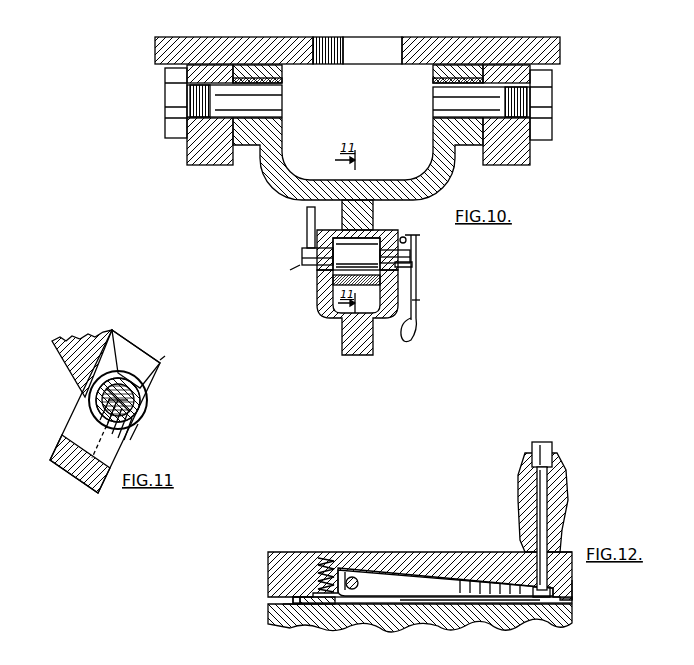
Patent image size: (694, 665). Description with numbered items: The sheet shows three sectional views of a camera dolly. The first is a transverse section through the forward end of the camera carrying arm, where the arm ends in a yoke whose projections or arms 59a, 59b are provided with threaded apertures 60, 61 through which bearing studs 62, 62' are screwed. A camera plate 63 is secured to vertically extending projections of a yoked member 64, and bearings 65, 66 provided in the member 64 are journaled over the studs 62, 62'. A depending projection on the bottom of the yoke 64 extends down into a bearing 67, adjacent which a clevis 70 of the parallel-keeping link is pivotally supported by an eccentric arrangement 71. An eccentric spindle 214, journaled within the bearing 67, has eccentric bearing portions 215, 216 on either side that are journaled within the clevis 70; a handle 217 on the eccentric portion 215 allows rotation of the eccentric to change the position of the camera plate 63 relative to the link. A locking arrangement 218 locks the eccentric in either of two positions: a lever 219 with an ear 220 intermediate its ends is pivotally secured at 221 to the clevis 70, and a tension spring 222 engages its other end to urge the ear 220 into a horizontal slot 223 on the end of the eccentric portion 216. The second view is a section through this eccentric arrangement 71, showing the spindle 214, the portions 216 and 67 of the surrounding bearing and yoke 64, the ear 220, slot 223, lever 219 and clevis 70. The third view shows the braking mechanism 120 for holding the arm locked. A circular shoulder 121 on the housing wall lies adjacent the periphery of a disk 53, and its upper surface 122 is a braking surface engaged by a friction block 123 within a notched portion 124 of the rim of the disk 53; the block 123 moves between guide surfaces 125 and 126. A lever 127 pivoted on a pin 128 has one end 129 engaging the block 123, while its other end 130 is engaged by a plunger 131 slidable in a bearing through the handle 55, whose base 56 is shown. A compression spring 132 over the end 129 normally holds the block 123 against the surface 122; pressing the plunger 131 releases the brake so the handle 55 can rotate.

In FIG. 10, the camera plate 63 is at (468, 31).
In FIG. 10, the yoke arm 59a is at (228, 166).
In FIG. 10, the yoke arm 59b is at (528, 166).
In FIG. 10, the yoked member 64 is at (436, 172).
In FIG. 11, the yoked member 64 is at (112, 340).
In FIG. 10, the bearing 65 is at (278, 81).
In FIG. 10, the bearing 66 is at (436, 80).
In FIG. 10, the threaded aperture 60 is at (186, 134).
In FIG. 10, the threaded aperture 61 is at (538, 130).
In FIG. 10, the bearing stud 62 is at (156, 103).
In FIG. 10, the bearing stud 62' is at (559, 105).
In FIG. 10, the bearing 67 is at (376, 232).
In FIG. 11, the bearing 67 is at (126, 372).
In FIG. 10, the clevis 70 is at (321, 320).
In FIG. 11, the clevis 70 is at (126, 470).
In FIG. 10, the eccentric arrangement 71 is at (280, 266).
In FIG. 11, the eccentric arrangement 71 is at (165, 358).
In FIG. 10, the horizontal slot 223 is at (356, 254).
In FIG. 11, the horizontal slot 223 is at (86, 403).
In FIG. 10, the eccentric bearing portion 215 is at (330, 278).
In FIG. 10, the eccentric spindle 214 is at (305, 255).
In FIG. 11, the eccentric spindle 214 is at (146, 394).
In FIG. 10, the handle 217 is at (307, 222).
In FIG. 10, the eccentric bearing portion 216 is at (410, 262).
In FIG. 11, the eccentric bearing portion 216 is at (150, 405).
In FIG. 10, the ear 220 is at (413, 259).
In FIG. 11, the ear 220 is at (80, 398).
In FIG. 10, the pivot 221 is at (410, 240).
In FIG. 11, the pivot 221 is at (150, 380).
In FIG. 10, the lever 219 is at (418, 312).
In FIG. 11, the lever 219 is at (58, 452).
In FIG. 10, the tension spring 222 is at (407, 338).
In FIG. 10, the locking arrangement 218 is at (426, 297).
In FIG. 12, the braking mechanism 120 is at (428, 546).
In FIG. 12, the notched portion 124 is at (388, 546).
In FIG. 12, the compression spring 132 is at (328, 556).
In FIG. 12, the pin 128 is at (359, 584).
In FIG. 12, the guide surface 126 is at (352, 604).
In FIG. 12, the lever 127 is at (455, 604).
In FIG. 12, the friction block 123 is at (326, 606).
In FIG. 12, the guide surface 125 is at (296, 602).
In FIG. 12, the lever end 129 is at (299, 607).
In FIG. 12, the circular shoulder 121 is at (516, 620).
In FIG. 12, the lever end 130 is at (528, 608).
In FIG. 12, the handle 55 is at (570, 500).
In FIG. 12, the plunger 131 is at (566, 524).
In FIG. 12, the bracket base 56 is at (567, 553).
In FIG. 12, the disk 53 is at (572, 590).
In FIG. 12, the upper surface 122 is at (573, 603).